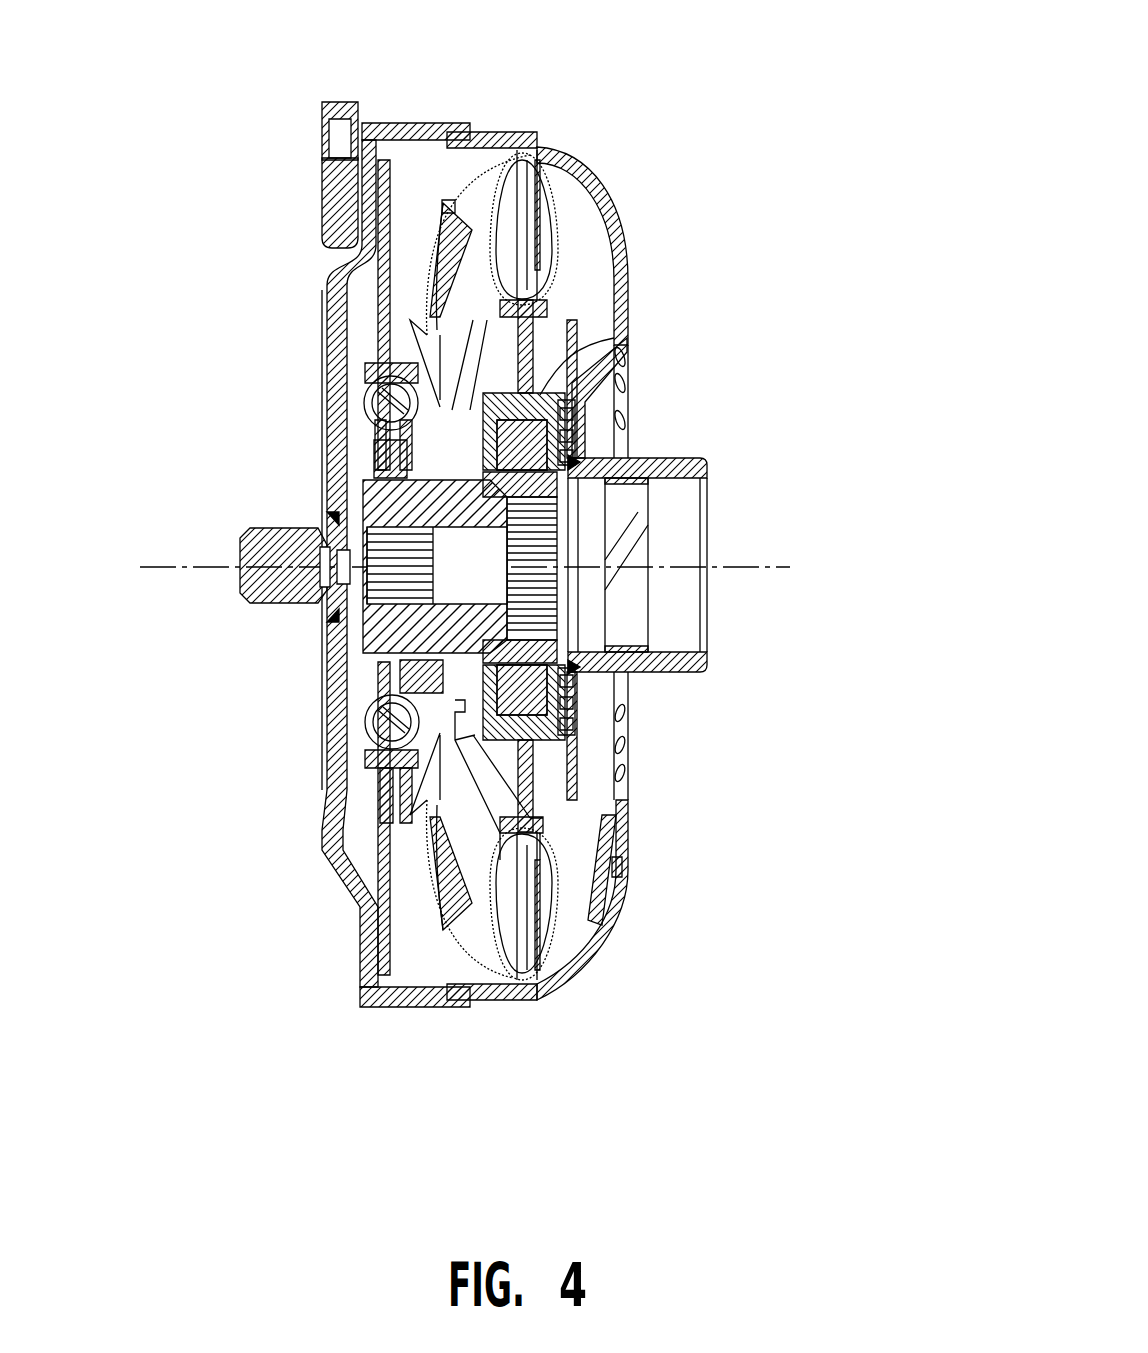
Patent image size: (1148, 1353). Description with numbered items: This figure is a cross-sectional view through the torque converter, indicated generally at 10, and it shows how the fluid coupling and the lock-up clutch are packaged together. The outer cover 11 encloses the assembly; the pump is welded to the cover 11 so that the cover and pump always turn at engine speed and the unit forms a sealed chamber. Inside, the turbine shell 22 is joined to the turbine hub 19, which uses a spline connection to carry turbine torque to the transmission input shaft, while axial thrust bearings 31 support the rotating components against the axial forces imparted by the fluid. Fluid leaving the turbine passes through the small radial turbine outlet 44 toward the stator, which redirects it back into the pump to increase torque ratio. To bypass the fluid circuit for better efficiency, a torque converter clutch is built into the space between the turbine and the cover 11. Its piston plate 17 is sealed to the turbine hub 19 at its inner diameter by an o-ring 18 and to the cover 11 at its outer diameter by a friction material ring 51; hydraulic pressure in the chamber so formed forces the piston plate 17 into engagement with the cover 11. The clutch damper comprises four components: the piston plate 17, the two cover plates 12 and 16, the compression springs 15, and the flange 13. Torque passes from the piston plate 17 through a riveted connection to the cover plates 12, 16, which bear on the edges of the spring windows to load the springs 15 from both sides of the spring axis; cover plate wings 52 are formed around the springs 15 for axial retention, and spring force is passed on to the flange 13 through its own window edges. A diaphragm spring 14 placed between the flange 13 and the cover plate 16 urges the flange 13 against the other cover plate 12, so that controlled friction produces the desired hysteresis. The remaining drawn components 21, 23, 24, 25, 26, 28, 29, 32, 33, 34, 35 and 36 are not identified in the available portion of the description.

The fan clutch assembly 10 is at (633, 157).
The cover 11 is at (325, 305).
The cover plate 12 is at (380, 347).
The flange 13 is at (366, 834).
The diaphragm spring 14 is at (407, 440).
The compression springs 15 is at (375, 727).
The cover plate 16 is at (380, 360).
The piston plate 17 is at (387, 247).
The o-ring 18 is at (402, 624).
The turbine hub 19 is at (395, 620).
The piston 21 is at (465, 706).
The turbine shell 22 is at (483, 193).
The spring 23 is at (452, 190).
The spring retainer 24 is at (512, 200).
The bearing 25 is at (533, 358).
The bearing 26 is at (556, 693).
The output shaft 28 is at (578, 647).
The bearing 29 is at (574, 465).
The axial thrust bearings 31 is at (540, 440).
The cover plate 32 is at (558, 140).
The outer shell 33 is at (580, 227).
The ring 34 is at (586, 150).
The flange 35 is at (690, 460).
The output hub 36 is at (630, 512).
The turbine outlet 44 is at (492, 786).
The friction material ring 51 is at (368, 985).
The cover plate wings 52 is at (382, 768).